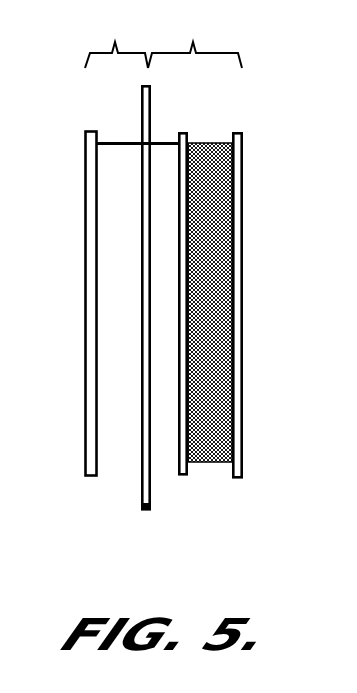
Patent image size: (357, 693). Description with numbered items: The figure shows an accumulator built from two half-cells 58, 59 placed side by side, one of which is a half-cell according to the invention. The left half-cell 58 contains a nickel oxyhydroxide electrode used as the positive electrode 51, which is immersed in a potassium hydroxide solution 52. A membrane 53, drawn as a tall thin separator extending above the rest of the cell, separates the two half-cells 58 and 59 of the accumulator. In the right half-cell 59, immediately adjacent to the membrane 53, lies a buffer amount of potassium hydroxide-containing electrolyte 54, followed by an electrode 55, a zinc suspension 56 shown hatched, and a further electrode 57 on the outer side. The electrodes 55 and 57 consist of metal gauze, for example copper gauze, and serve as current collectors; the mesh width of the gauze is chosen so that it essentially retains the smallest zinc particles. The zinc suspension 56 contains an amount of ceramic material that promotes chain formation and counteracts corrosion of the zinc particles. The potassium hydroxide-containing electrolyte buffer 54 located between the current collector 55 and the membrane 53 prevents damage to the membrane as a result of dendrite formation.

The positive electrode 51 is at (87, 472).
The potassium hydroxide solution 52 is at (122, 453).
The membrane 53 is at (145, 505).
The buffer amount of potassium hydroxide-containing electrolyte 54 is at (160, 452).
The electrode 55 is at (187, 463).
The zinc suspension 56 is at (207, 455).
The electrode 57 is at (240, 463).
The half-cell 58 is at (116, 39).
The half-cell 59 is at (195, 39).